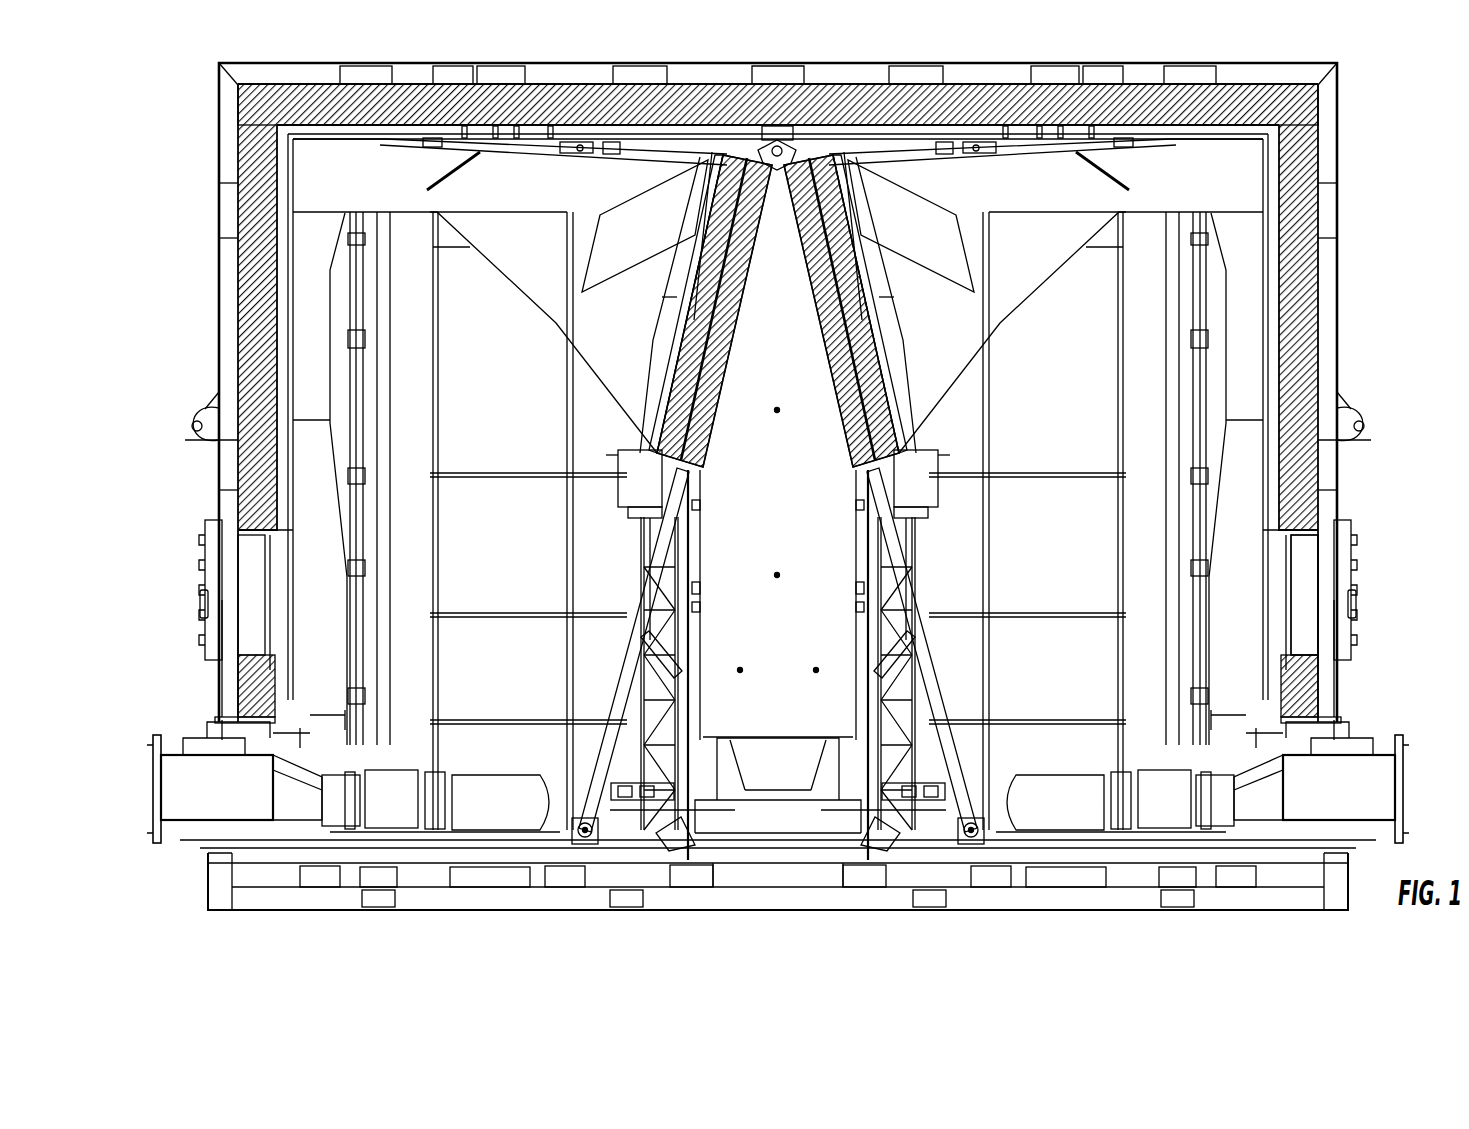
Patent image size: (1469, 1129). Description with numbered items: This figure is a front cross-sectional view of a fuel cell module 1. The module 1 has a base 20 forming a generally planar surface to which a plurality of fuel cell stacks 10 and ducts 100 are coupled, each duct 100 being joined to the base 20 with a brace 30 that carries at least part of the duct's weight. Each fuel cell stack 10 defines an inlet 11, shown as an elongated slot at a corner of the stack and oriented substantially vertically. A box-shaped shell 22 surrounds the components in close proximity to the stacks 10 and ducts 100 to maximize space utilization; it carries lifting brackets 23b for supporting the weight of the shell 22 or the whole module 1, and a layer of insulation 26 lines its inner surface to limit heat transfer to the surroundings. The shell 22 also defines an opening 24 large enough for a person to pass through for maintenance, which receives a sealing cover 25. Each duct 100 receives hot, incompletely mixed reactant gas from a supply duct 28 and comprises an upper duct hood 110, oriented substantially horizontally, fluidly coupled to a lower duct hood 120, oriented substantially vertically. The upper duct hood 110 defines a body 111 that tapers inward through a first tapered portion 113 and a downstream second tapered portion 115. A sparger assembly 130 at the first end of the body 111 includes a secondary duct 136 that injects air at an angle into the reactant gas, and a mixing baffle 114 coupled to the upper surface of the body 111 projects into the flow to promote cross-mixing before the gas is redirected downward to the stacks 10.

The fuel cell module 1 is at (168, 66).
The fuel cell stack 10 is at (410, 292).
The inlet 11 is at (352, 350).
The base 20 is at (745, 892).
The shell 22 is at (1325, 112).
The lifting bracket 23b is at (197, 413).
The opening 24 is at (1305, 567).
The cover 25 is at (230, 632).
The insulation 26 is at (1227, 100).
The supply duct 28 is at (778, 715).
The brace 30 is at (620, 755).
The duct 100 is at (572, 222).
The upper duct hood 110 is at (387, 128).
The body 111 is at (494, 183).
The first tapered portion 113 is at (658, 218).
The mixing baffle 114 is at (447, 177).
The second tapered portion 115 is at (467, 196).
The lower duct hood 120 is at (305, 482).
The sparger assembly 130 is at (748, 178).
The secondary duct 136 is at (703, 200).